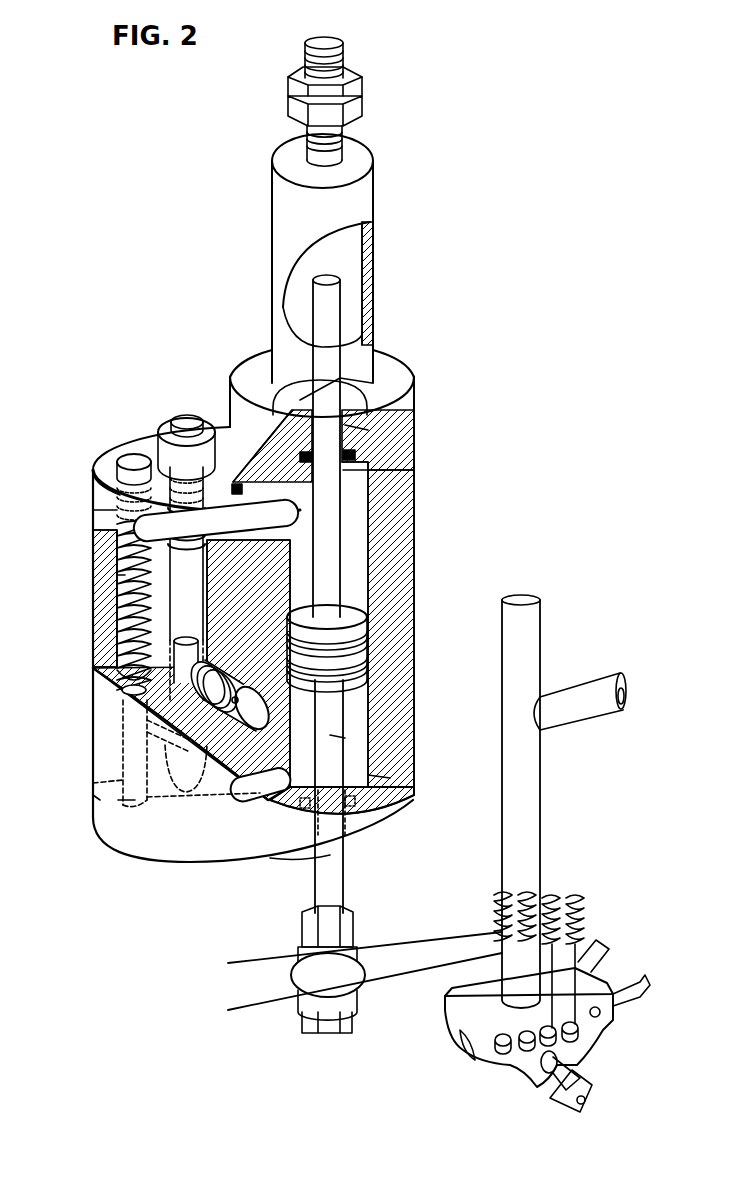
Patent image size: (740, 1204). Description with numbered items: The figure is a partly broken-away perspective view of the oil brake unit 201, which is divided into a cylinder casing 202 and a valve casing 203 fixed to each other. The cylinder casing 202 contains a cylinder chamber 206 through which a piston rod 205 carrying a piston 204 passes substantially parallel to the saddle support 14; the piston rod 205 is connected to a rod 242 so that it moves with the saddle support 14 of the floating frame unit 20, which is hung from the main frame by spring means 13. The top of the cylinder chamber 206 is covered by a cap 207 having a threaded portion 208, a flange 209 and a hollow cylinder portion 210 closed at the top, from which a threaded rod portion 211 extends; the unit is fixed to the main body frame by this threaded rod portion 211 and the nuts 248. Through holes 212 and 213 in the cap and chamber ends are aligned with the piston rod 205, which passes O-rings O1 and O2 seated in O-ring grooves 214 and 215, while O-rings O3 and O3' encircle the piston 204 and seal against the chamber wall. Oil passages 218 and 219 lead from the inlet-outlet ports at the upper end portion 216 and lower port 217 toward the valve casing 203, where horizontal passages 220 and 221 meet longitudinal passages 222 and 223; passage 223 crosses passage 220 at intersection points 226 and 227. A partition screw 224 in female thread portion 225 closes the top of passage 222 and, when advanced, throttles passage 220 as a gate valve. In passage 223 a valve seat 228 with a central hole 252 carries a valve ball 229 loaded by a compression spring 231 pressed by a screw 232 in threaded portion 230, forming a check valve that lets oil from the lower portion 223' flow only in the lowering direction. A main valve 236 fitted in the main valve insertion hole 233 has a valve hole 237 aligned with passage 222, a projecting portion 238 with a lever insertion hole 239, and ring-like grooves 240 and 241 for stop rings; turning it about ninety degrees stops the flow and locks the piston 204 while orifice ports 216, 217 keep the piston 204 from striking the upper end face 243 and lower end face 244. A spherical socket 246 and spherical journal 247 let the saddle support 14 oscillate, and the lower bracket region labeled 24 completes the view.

The threaded rod portion 211 is at (345, 52).
The nuts 248 is at (357, 83).
The hollow cylinder portion 210 is at (378, 240).
The upper end portion / oil inlet-outlet port 216 is at (318, 540).
The cap 207 is at (400, 370).
The cylinder casing 202 is at (414, 612).
The oil brake unit 201 is at (432, 562).
The valve casing 203 is at (112, 560).
The through hole 212 is at (290, 412).
The threaded portion 208 is at (390, 446).
The cylinder chamber 206 is at (390, 502).
The O-ring groove 215 is at (380, 800).
The oil passage 223 is at (152, 670).
The O-ring O1 is at (348, 462).
The flange 209 is at (385, 395).
The O-ring groove 214 is at (380, 428).
The upper end face 243 is at (375, 470).
The piston 204 is at (347, 665).
The O-ring O3 is at (376, 647).
The O-ring O3' is at (378, 682).
The oil inlet-outlet port 217 is at (318, 778).
The piston rod 205 is at (335, 738).
The lower end face 244 is at (393, 777).
The through hole 213 is at (323, 857).
The O-ring O2 is at (302, 818).
The partition screw 224 is at (175, 418).
The female thread portion 225 is at (170, 500).
The screw 232 is at (130, 468).
The ring-like groove 241 is at (122, 622).
The threaded portion 230 is at (95, 490).
The intersection point 226 is at (100, 528).
The compression spring 231 is at (122, 580).
The valve ball 229 is at (105, 652).
The valve seat 228 is at (115, 668).
The hole 252 is at (124, 684).
The main valve insertion hole 233 is at (130, 700).
The oil passage 218 is at (278, 533).
The horizontal oil passage 220 is at (242, 490).
The oil passage 222 is at (210, 597).
The valve hole 237 is at (197, 640).
The projecting portion 238 is at (258, 713).
The lever insertion hole 239 is at (222, 690).
The main valve 236 is at (208, 658).
The ring-like groove 240 is at (178, 728).
The oil passage 219 is at (270, 782).
The horizontal oil passage 221 is at (212, 797).
The lower portion of oil passage 223' is at (57, 810).
The intersection point 227 is at (127, 798).
The spherical journal 247 is at (300, 950).
The spherical socket 246 is at (305, 982).
The rod 242 is at (430, 945).
The saddle support 14 is at (545, 820).
The floating frame unit 20 is at (580, 705).
The spring means 13 is at (580, 902).
The bracket lever 24 is at (630, 998).